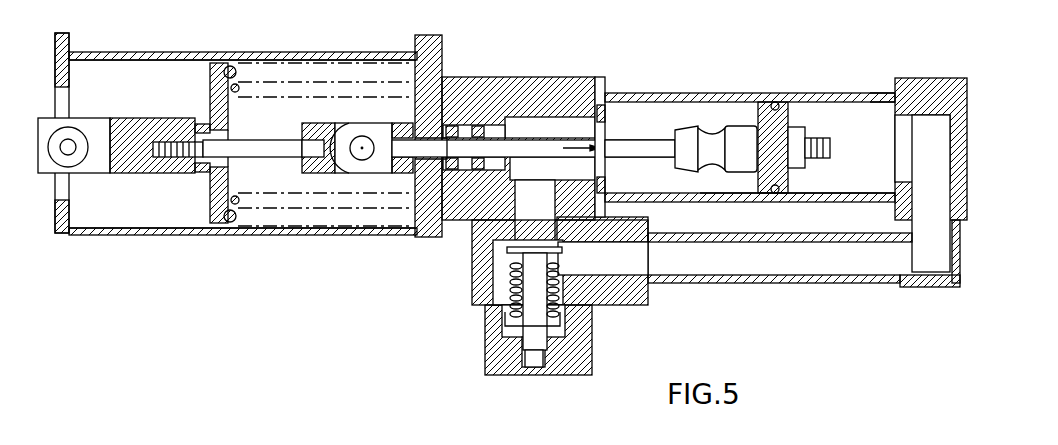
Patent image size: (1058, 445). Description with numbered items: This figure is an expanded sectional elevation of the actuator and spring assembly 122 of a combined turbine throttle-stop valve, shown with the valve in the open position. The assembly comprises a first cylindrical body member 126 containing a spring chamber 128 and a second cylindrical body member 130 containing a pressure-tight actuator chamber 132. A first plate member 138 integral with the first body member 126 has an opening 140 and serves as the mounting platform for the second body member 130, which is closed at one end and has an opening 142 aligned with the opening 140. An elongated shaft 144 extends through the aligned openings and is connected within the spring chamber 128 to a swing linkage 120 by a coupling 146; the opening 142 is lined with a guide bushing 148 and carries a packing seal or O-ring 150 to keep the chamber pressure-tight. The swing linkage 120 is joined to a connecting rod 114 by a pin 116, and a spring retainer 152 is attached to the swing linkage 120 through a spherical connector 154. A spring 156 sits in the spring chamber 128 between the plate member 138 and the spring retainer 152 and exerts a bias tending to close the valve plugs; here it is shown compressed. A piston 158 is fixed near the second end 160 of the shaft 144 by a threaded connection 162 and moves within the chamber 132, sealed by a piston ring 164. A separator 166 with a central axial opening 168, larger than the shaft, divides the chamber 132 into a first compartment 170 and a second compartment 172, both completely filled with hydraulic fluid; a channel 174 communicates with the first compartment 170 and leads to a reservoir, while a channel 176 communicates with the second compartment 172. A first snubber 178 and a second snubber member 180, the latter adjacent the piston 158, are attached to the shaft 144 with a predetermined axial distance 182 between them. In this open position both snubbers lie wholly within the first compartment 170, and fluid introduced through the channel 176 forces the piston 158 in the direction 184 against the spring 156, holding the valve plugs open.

The connecting rod 114 is at (123, 165).
The pin 116 is at (70, 150).
The swing linkage 120 is at (255, 152).
The actuator and spring assembly 122 is at (430, 346).
The first cylindrical body member 126 is at (104, 54).
The spring chamber 128 is at (168, 61).
The second cylindrical body member 130 is at (853, 93).
The pressure-tight actuator chamber 132 is at (880, 103).
The first plate member 138 is at (432, 62).
The opening 140 is at (407, 143).
The opening 142 is at (413, 170).
The elongated shaft 144 is at (621, 146).
The coupling 146 is at (365, 128).
The guide bushing 148 is at (505, 128).
The packing seal or O-ring 150 is at (485, 140).
The spring retainer 152 is at (212, 198).
The spherical connector 154 is at (198, 122).
The spring 156 is at (300, 88).
The piston 158 is at (790, 122).
The second end 160 is at (828, 143).
The threaded connection 162 is at (797, 165).
The piston ring 164 is at (771, 101).
The separator 166 is at (606, 106).
The central axial opening 168 is at (605, 123).
The first compartment 170 is at (800, 199).
The second compartment 172 is at (534, 182).
The channel 174 is at (955, 207).
The channel 176 is at (515, 222).
The first snubber 178 is at (682, 164).
The second snubber member 180 is at (737, 130).
The predetermined axial distance 182 is at (708, 166).
The direction 184 is at (563, 155).